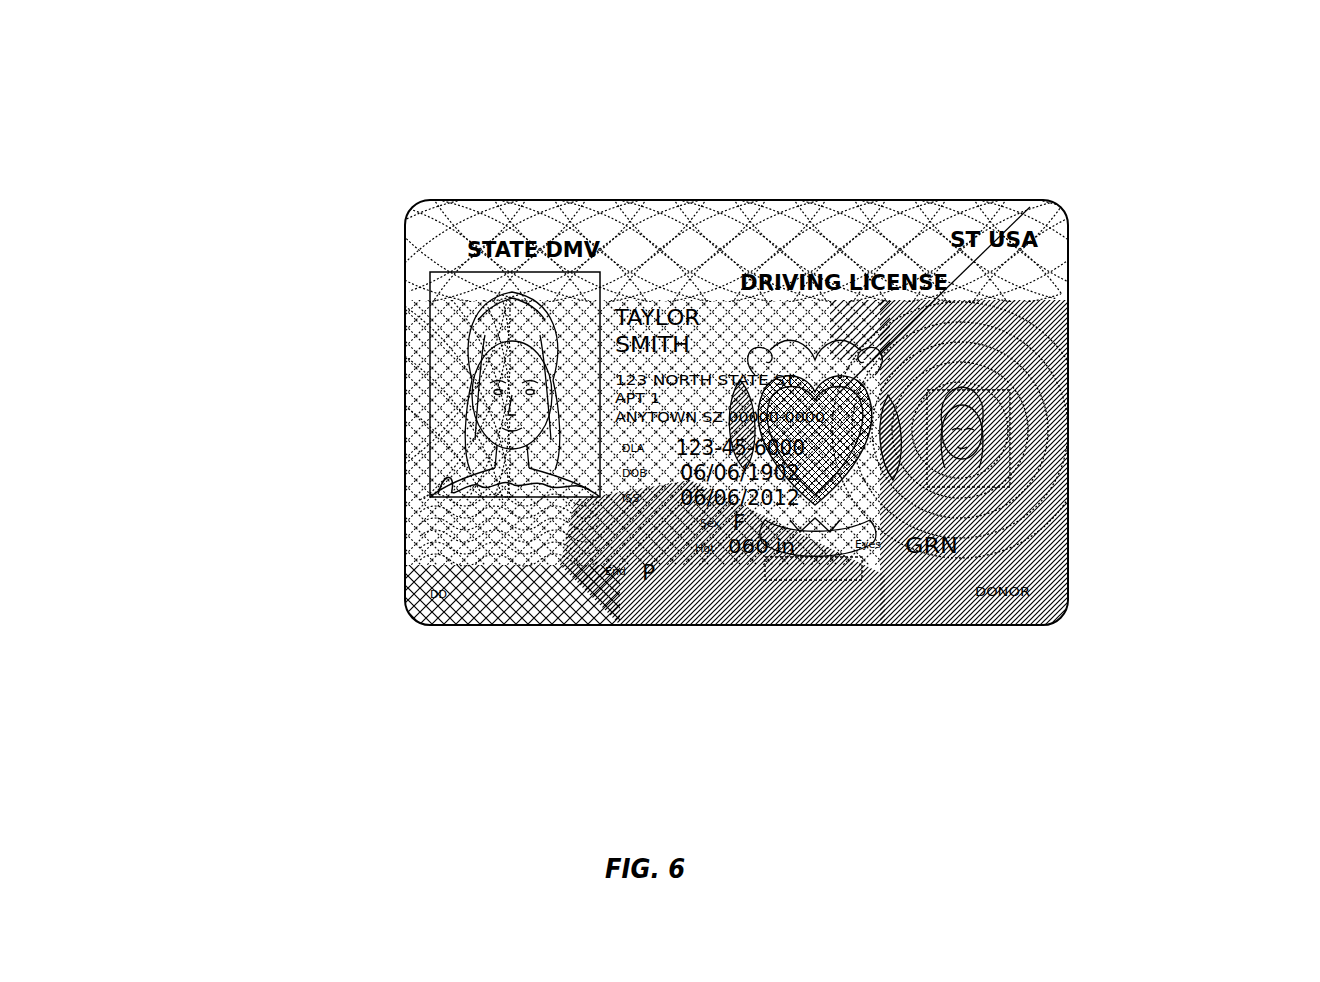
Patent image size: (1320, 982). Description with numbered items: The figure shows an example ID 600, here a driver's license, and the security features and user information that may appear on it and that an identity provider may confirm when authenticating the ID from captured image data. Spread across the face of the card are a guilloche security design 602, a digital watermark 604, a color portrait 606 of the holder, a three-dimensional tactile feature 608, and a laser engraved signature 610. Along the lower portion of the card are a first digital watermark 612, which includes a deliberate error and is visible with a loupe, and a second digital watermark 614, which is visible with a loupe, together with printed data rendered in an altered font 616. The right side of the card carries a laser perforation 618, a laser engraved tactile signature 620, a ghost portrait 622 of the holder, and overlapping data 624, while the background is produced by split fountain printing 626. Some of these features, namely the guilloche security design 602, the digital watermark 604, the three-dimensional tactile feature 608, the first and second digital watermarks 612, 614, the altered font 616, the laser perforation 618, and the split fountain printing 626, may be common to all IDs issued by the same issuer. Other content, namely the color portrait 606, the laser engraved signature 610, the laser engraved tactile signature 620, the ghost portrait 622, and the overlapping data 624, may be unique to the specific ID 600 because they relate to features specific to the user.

The ID 600 is at (1158, 78).
The guilloche security design 602 is at (405, 232).
The digital watermark 604 is at (405, 290).
The color portrait 606 is at (405, 342).
The 3D tactile feature 608 is at (405, 432).
The laser engraved signature 610 is at (425, 492).
The first digital watermark 612 is at (518, 572).
The second digital watermark 614 is at (612, 600).
The altered font 616 is at (872, 568).
The laser perforation 618 is at (1057, 348).
The laser engraved tactile signature 620 is at (937, 378).
The ghost portrait 622 is at (1012, 425).
The overlapping data 624 is at (1017, 517).
The split fountain printing 626 is at (927, 584).